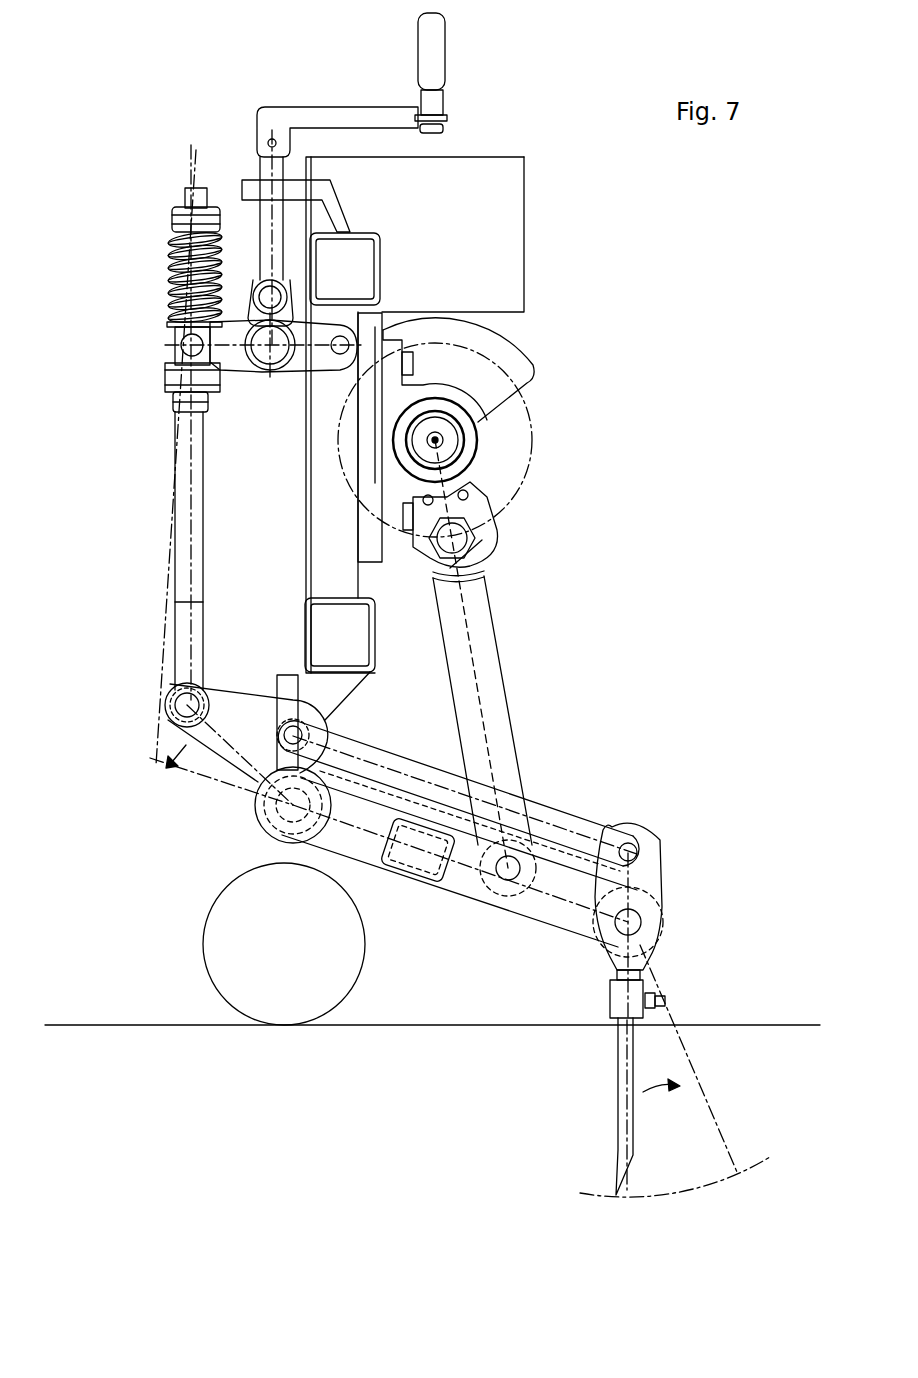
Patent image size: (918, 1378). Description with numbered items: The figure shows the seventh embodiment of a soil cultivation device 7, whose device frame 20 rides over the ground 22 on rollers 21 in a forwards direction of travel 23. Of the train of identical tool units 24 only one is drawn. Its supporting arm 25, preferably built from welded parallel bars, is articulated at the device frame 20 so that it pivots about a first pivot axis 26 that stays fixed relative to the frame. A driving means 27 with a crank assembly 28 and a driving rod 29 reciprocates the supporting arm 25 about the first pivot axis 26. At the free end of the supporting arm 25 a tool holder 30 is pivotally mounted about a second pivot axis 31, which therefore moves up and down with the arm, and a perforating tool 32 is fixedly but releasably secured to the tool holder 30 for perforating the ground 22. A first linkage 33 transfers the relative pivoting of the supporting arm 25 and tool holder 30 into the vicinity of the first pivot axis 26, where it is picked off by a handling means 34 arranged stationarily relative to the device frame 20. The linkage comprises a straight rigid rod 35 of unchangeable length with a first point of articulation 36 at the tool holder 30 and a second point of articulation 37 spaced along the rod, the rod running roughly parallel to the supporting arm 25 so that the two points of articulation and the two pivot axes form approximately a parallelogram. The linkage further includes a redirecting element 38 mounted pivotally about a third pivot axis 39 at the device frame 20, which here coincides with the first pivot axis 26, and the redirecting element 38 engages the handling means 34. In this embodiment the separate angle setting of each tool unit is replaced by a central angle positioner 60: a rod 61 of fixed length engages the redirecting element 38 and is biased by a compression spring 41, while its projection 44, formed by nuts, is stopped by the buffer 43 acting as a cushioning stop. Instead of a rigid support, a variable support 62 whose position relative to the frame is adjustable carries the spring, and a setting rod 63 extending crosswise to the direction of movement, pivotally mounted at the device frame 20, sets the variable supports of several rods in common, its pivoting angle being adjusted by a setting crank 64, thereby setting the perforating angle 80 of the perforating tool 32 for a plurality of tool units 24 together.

The soil cultivation device 7 is at (652, 310).
The device frame 20 is at (306, 548).
The rollers 21 is at (338, 972).
The ground 22 is at (502, 1022).
The forwards direction of travel 23 is at (670, 498).
The tool unit 24 is at (722, 714).
The supporting arm 25 is at (455, 880).
The first pivot axis 26 is at (285, 822).
The driving means 27 is at (557, 486).
The crank assembly 28 is at (533, 384).
The driving rod 29 is at (500, 690).
The tool holder 30 is at (652, 875).
The second pivot axis 31 is at (642, 920).
The perforating tool 32 is at (632, 1130).
The first linkage 33 is at (640, 742).
The handling means 34 is at (135, 248).
The rigid rod 35 is at (565, 815).
The first point of articulation 36 is at (608, 846).
The second point of articulation 37 is at (290, 726).
The redirecting element 38 is at (222, 752).
The third pivot axis 39 is at (300, 797).
The compression spring 41 is at (166, 290).
The buffer 43 is at (165, 380).
The projection 44 is at (178, 406).
The central angle positioner 60 is at (222, 118).
The rod 61 is at (180, 644).
The variable support 62 is at (240, 368).
The setting rod 63 is at (272, 372).
The setting crank 64 is at (332, 104).
The tine swing angle 80 is at (546, 946).